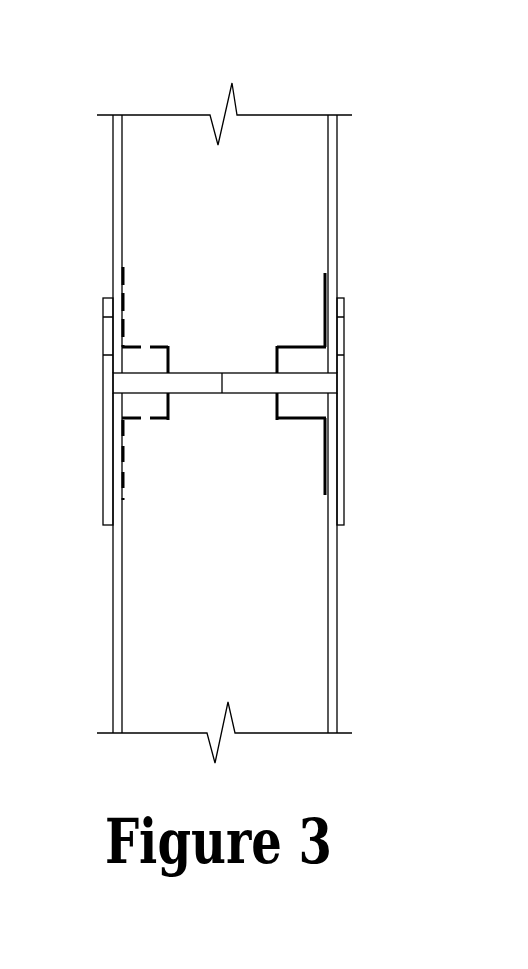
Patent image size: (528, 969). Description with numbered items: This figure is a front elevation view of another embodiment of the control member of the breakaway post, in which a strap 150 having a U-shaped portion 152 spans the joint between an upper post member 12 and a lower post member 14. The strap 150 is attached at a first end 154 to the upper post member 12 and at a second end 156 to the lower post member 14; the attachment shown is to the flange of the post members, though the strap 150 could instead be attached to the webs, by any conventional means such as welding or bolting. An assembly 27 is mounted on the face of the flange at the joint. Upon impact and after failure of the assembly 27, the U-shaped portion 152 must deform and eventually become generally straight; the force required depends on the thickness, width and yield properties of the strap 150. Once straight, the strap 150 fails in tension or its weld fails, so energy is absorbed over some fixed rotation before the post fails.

The upper post member 12 is at (337, 200).
The lower post member 14 is at (334, 632).
The assembly 27 is at (344, 387).
The strap 150 is at (147, 343).
The U-shaped portion 152 is at (171, 349).
The first end 154 is at (326, 274).
The second end 156 is at (325, 495).